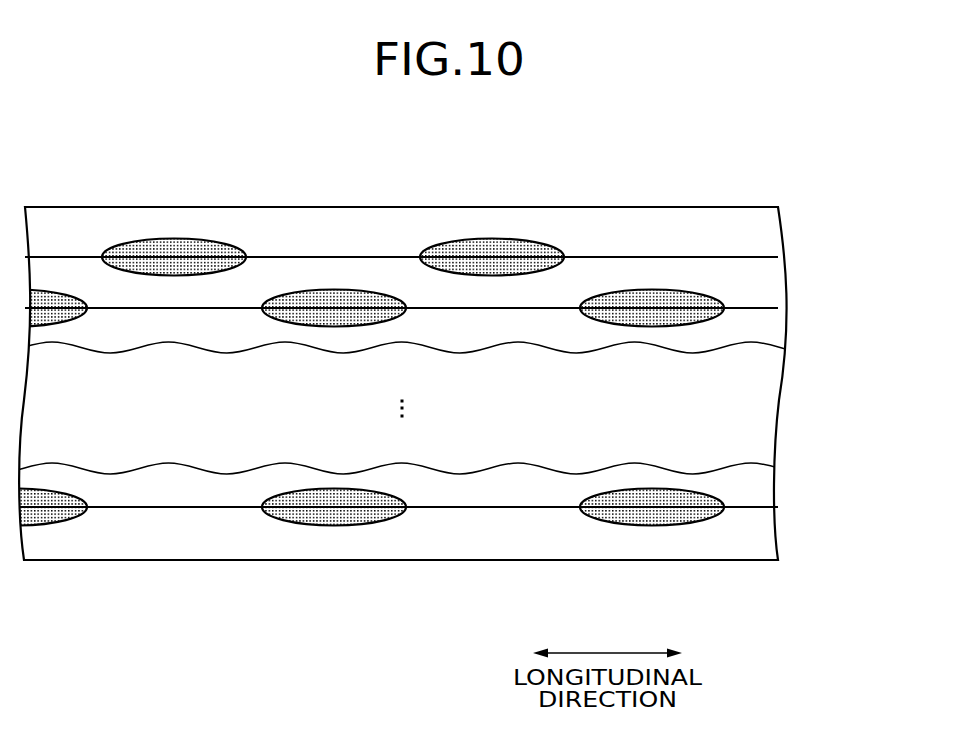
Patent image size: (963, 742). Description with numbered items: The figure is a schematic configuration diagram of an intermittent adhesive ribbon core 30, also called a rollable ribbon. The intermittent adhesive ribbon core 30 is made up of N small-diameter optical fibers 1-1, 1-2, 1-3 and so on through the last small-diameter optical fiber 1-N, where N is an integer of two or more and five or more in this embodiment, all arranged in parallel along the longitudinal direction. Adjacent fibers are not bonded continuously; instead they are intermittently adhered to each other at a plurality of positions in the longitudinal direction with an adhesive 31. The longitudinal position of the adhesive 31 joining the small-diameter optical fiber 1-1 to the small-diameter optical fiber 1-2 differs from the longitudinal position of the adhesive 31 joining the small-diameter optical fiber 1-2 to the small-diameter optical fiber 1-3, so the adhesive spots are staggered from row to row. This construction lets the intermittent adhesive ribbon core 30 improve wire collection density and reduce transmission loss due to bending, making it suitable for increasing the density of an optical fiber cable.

The intermittent adhesive ribbon core 30 is at (402, 168).
The adhesive 31 is at (173, 238).
The small-diameter optical fiber 1-1 is at (758, 233).
The small-diameter optical fiber 1-2 is at (758, 284).
The small-diameter optical fiber 1-3 is at (758, 326).
The small-diameter optical fiber 1-N is at (758, 533).